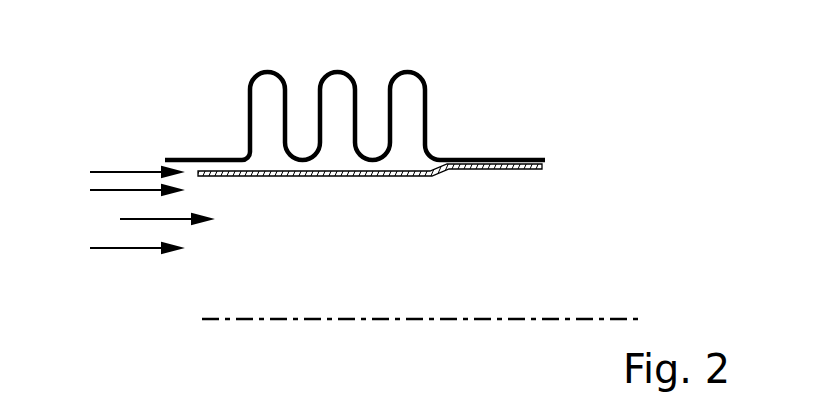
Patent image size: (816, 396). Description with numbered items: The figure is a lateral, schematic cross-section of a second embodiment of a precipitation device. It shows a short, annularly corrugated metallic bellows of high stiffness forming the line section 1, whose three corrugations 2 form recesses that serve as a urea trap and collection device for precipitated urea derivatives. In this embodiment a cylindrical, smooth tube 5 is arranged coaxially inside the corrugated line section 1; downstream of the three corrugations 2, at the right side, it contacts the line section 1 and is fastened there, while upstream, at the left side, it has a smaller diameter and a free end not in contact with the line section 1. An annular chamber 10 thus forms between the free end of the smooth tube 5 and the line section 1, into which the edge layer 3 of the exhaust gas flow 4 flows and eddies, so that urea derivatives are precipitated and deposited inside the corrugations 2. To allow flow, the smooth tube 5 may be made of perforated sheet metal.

The line section 1 is at (508, 159).
The corrugations 2 is at (402, 83).
The edge layer 3 is at (108, 172).
The exhaust gas flow 4 is at (115, 248).
The smooth tube 5 is at (382, 178).
The annular chamber 10 is at (206, 161).